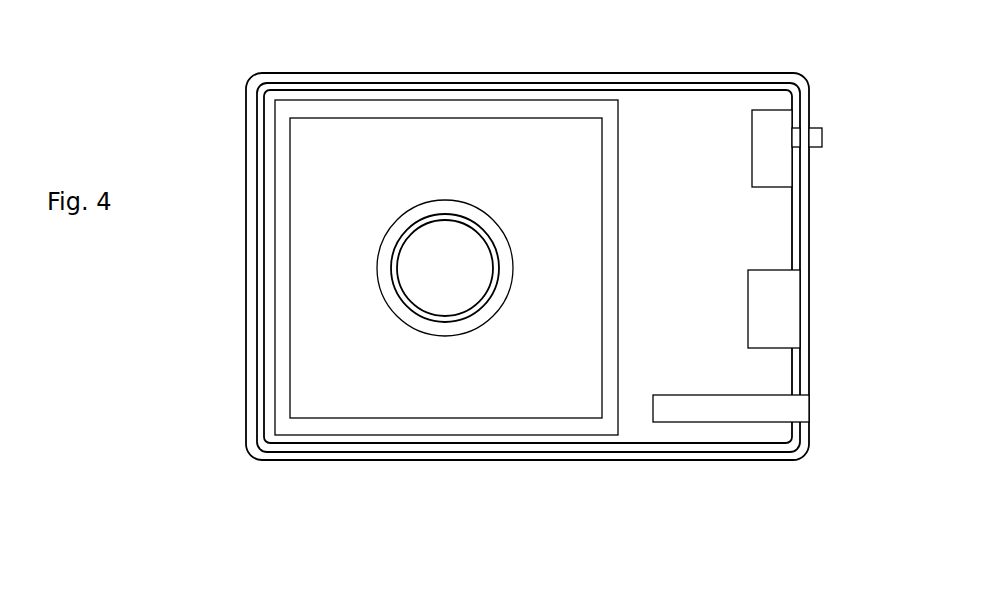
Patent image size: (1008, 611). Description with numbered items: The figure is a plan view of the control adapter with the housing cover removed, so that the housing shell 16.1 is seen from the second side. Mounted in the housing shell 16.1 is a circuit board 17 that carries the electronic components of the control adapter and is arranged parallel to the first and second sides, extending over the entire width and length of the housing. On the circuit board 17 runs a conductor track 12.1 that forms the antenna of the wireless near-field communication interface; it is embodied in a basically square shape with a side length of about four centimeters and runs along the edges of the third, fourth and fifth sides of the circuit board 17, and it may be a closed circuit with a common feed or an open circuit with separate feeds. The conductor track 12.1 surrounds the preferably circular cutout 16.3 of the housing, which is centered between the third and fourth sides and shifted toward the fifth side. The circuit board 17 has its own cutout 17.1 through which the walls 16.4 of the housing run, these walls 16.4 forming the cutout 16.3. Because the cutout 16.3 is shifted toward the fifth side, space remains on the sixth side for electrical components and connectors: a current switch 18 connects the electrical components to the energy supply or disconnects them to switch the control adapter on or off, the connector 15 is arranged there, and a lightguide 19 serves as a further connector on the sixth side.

The housing shell 16.1 is at (252, 152).
The circuit board 17 is at (635, 427).
The conductor track 12.1 is at (513, 427).
The cutout 17.1 is at (395, 312).
The walls 16.4 is at (423, 220).
The cutout 16.3 is at (482, 245).
The current switch 18 is at (752, 128).
The connector 15 is at (748, 298).
The lightguide 19 is at (810, 410).